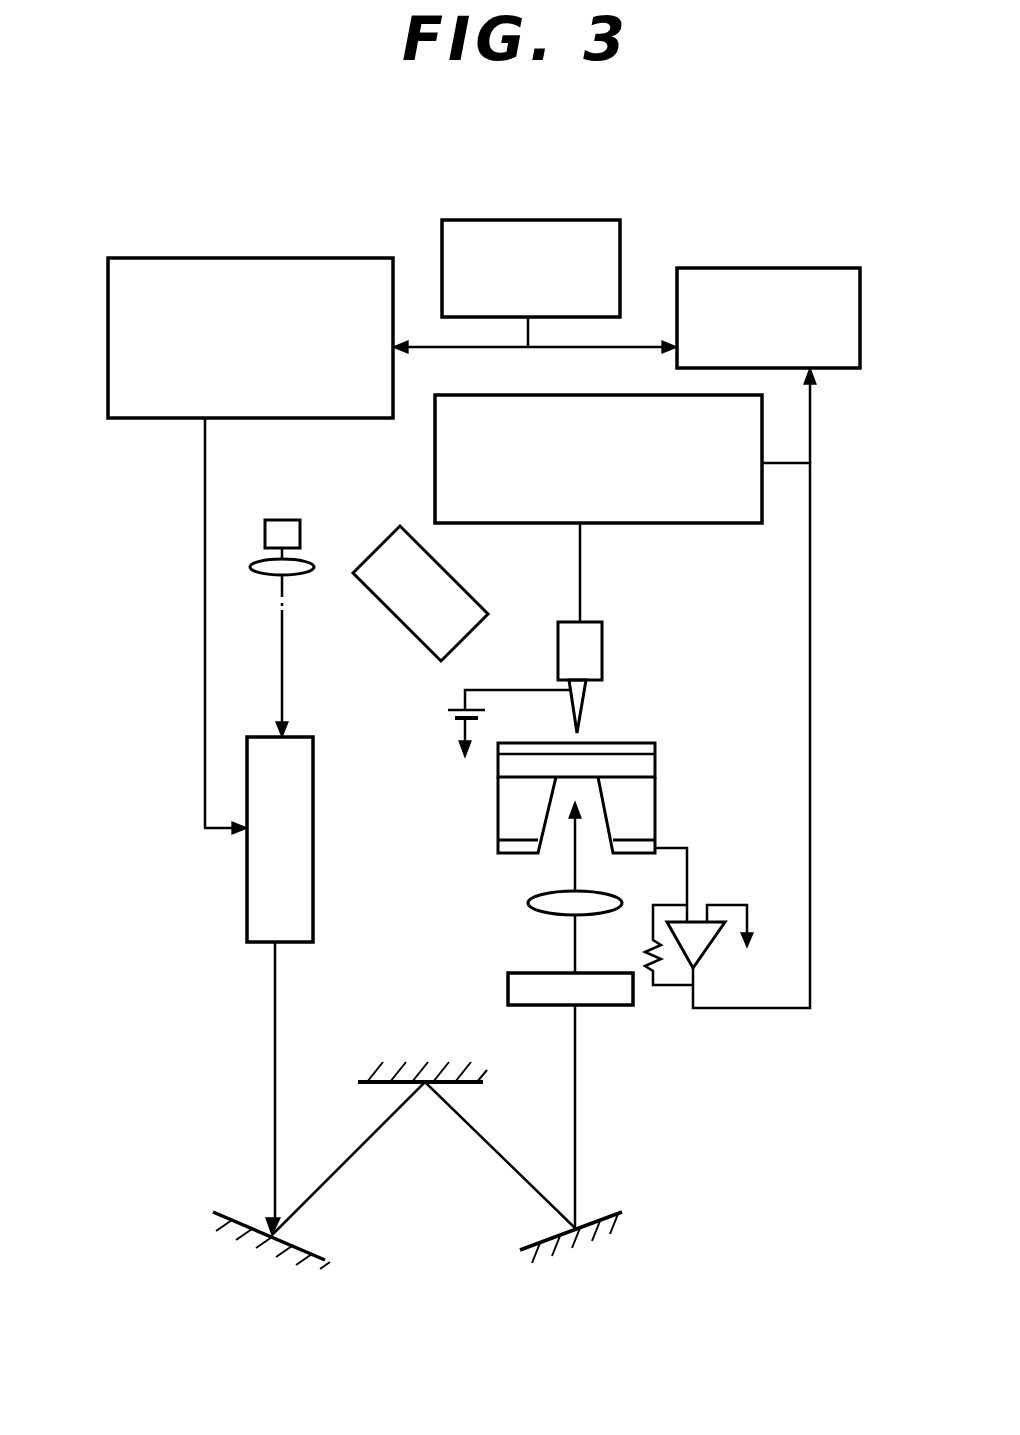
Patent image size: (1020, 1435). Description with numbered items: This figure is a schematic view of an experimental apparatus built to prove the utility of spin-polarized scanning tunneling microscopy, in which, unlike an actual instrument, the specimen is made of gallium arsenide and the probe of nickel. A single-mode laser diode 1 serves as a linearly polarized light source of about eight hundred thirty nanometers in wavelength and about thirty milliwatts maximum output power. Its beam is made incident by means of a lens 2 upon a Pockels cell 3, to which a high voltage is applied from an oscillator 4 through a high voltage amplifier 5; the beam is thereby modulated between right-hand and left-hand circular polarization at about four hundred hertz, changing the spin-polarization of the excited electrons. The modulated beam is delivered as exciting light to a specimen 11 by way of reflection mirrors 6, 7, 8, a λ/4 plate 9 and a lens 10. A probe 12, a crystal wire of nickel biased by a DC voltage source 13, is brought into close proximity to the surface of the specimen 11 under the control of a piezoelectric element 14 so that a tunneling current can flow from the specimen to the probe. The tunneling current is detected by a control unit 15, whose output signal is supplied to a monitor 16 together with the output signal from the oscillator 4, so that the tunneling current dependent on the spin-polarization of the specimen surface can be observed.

The single-mode laser diode 1 is at (300, 522).
The lens 2 is at (305, 575).
The Pockels cell 3 is at (316, 808).
The oscillator 4 is at (528, 220).
The high voltage amplifier 5 is at (244, 258).
The reflection mirror 6 is at (237, 1222).
The reflection mirror 7 is at (368, 1085).
The reflection mirror 8 is at (598, 1222).
The λ/4 plate 9 is at (508, 988).
The lens 10 is at (528, 905).
The specimen 11 is at (664, 768).
The probe 12 is at (582, 712).
The DC voltage source 13 is at (445, 712).
The piezoelectric element 14 is at (604, 640).
The control unit 15 is at (722, 528).
The monitor 16 is at (767, 268).